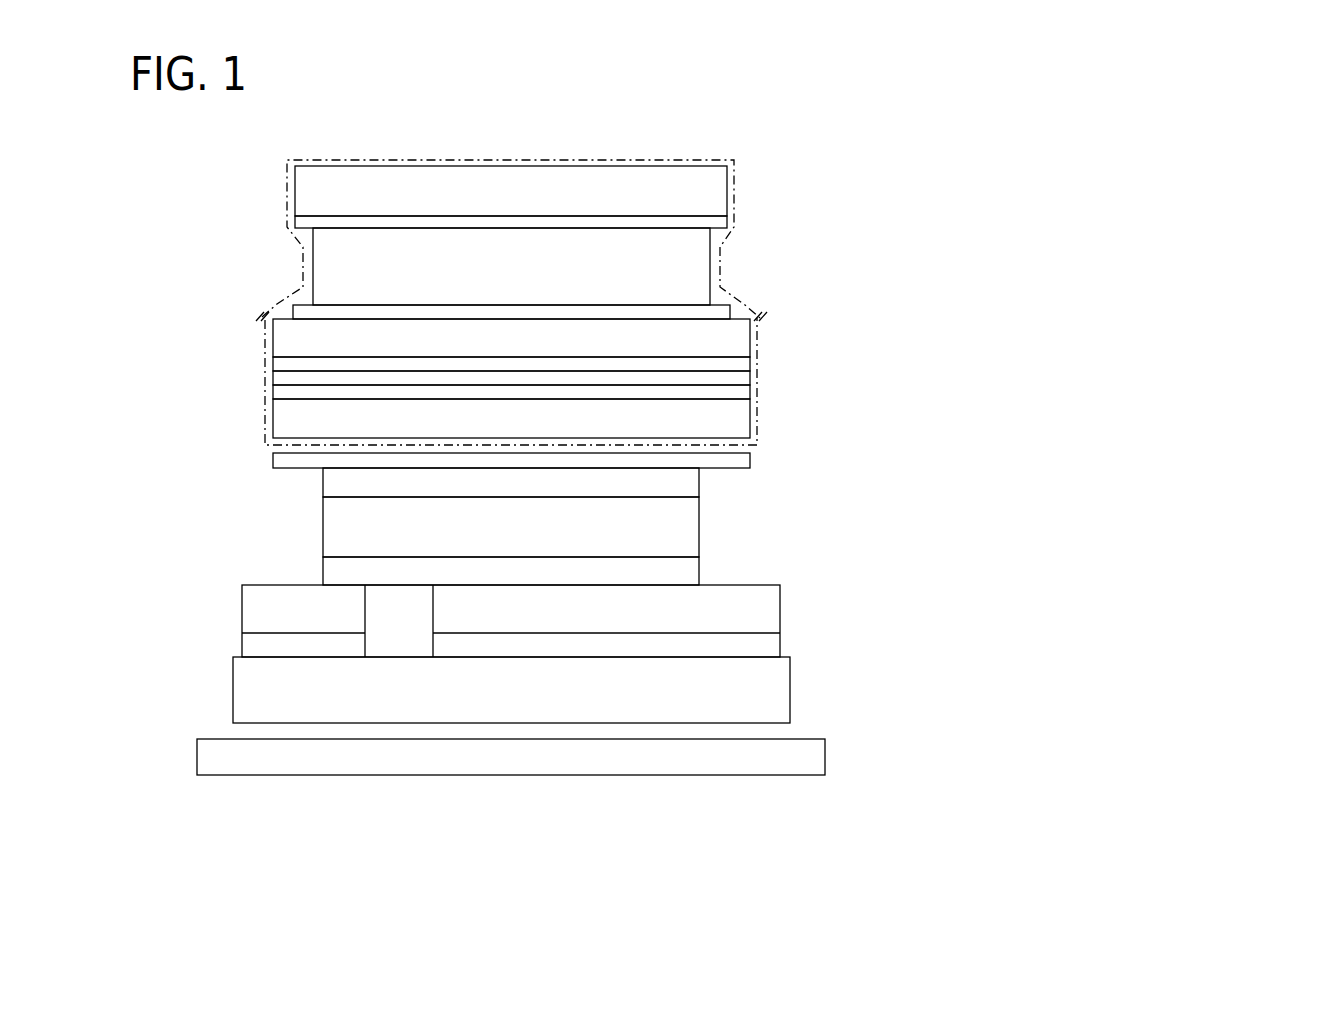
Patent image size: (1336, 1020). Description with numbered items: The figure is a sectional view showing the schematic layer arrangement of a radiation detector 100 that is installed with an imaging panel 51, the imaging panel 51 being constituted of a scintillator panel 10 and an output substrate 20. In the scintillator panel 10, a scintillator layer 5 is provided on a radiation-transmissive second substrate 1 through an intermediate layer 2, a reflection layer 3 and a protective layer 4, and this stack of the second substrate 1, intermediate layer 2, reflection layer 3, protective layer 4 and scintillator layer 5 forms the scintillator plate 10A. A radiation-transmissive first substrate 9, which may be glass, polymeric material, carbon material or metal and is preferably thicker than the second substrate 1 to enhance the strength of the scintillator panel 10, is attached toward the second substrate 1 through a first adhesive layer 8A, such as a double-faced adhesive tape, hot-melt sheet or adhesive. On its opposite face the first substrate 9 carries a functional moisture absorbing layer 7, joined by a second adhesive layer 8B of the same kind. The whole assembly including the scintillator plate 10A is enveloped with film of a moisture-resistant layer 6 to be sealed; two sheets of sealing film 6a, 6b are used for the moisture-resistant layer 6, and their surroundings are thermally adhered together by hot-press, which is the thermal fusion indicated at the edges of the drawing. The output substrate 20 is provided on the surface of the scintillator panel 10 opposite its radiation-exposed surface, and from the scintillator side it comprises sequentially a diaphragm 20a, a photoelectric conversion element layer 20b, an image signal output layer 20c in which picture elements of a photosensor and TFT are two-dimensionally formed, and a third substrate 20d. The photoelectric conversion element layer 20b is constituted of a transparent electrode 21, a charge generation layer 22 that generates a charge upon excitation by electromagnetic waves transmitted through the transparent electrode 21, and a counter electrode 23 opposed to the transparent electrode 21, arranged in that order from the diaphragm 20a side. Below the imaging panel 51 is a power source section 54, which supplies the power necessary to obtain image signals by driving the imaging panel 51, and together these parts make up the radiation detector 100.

The second substrate 1 is at (740, 338).
The intermediate layer 2 is at (745, 362).
The reflection layer 3 is at (745, 378).
The protective layer 4 is at (745, 392).
The scintillator layer 5 is at (740, 420).
The moisture-resistant layer 6 is at (680, 286).
The sealing film 6a is at (287, 210).
The sealing film 6b is at (265, 378).
The moisture absorbing layer 7 is at (710, 189).
The first adhesive layer 8A is at (730, 310).
The second adhesive layer 8B is at (708, 220).
The first substrate 9 is at (688, 268).
The scintillator panel 10 is at (1182, 110).
The scintillator plate 10A is at (1118, 323).
The output substrate 20 is at (1182, 450).
The diaphragm of output substrate 20a is at (748, 464).
The photoelectric conversion element layer 20b is at (1103, 490).
The output layer 20c is at (760, 608).
The third substrate 20d is at (770, 690).
The transparent electrode 21 is at (688, 483).
The charge generation layer 22 is at (685, 532).
The counter electrode 23 is at (680, 574).
The imaging panel 51 is at (1242, 107).
The power source section 54 is at (808, 755).
The radiation detector 100 is at (178, 167).